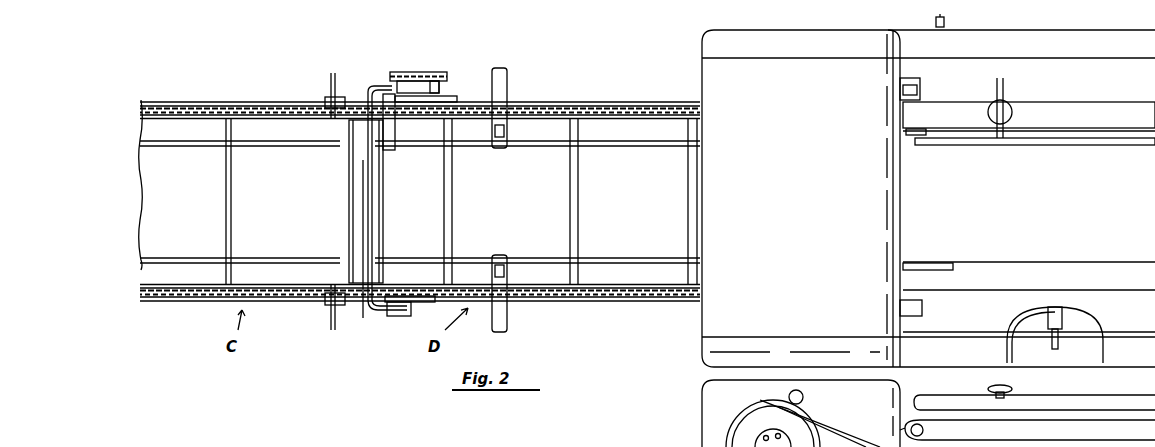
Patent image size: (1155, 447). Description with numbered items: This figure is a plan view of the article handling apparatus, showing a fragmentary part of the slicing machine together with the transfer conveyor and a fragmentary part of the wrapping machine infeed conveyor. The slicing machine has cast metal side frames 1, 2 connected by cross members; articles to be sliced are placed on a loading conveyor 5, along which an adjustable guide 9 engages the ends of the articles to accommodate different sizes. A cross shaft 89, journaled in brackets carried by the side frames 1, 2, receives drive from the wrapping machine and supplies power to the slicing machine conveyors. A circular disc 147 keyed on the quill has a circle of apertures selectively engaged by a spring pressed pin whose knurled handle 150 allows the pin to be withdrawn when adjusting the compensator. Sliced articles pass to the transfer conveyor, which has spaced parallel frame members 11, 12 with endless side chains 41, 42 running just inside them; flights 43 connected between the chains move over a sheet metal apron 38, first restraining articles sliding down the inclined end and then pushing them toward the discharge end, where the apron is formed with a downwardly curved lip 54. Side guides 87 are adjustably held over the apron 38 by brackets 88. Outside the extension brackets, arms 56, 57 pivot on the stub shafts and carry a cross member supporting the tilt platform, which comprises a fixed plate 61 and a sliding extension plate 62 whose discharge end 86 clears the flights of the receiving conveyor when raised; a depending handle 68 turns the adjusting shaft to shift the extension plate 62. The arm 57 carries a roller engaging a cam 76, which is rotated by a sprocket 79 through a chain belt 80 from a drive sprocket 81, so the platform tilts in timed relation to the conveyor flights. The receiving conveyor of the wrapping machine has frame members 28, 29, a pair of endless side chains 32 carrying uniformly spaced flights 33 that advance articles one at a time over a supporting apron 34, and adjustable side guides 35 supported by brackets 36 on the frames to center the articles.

The side frame 1 is at (702, 345).
The side frame 2 is at (702, 44).
The loading conveyor 5 is at (1086, 234).
The guide 9 is at (1108, 142).
The frame member 11 is at (546, 303).
The frame member 12 is at (548, 102).
The frame member 28 is at (173, 304).
The frame member 29 is at (200, 92).
The side belts or chains 32 is at (258, 120).
The flights 33 is at (224, 198).
The supporting apron 34 is at (262, 246).
The side guides 35 is at (245, 146).
The brackets 36 is at (324, 98).
The sheet metal apron 38 is at (540, 228).
The side belt or chain 41 is at (640, 283).
The side belt or chain 42 is at (603, 118).
The flights 43 is at (455, 212).
The downwardly curved lip 54 is at (392, 204).
The arm 56 is at (386, 316).
The arm 57 is at (372, 90).
The fixed plate 61 is at (377, 229).
The extension plate 62 is at (352, 193).
The handle 68 is at (362, 318).
The cam 76 is at (448, 88).
The sprocket 79 is at (442, 86).
The chain belt 80 is at (416, 72).
The drive sprocket 81 is at (382, 86).
The discharge end 86 is at (348, 186).
The side guides 87 is at (536, 147).
The brackets 88 is at (502, 68).
The cross shaft 89 is at (948, 24).
The circular disc 147 is at (1034, 322).
The knurled handle 150 is at (1058, 344).